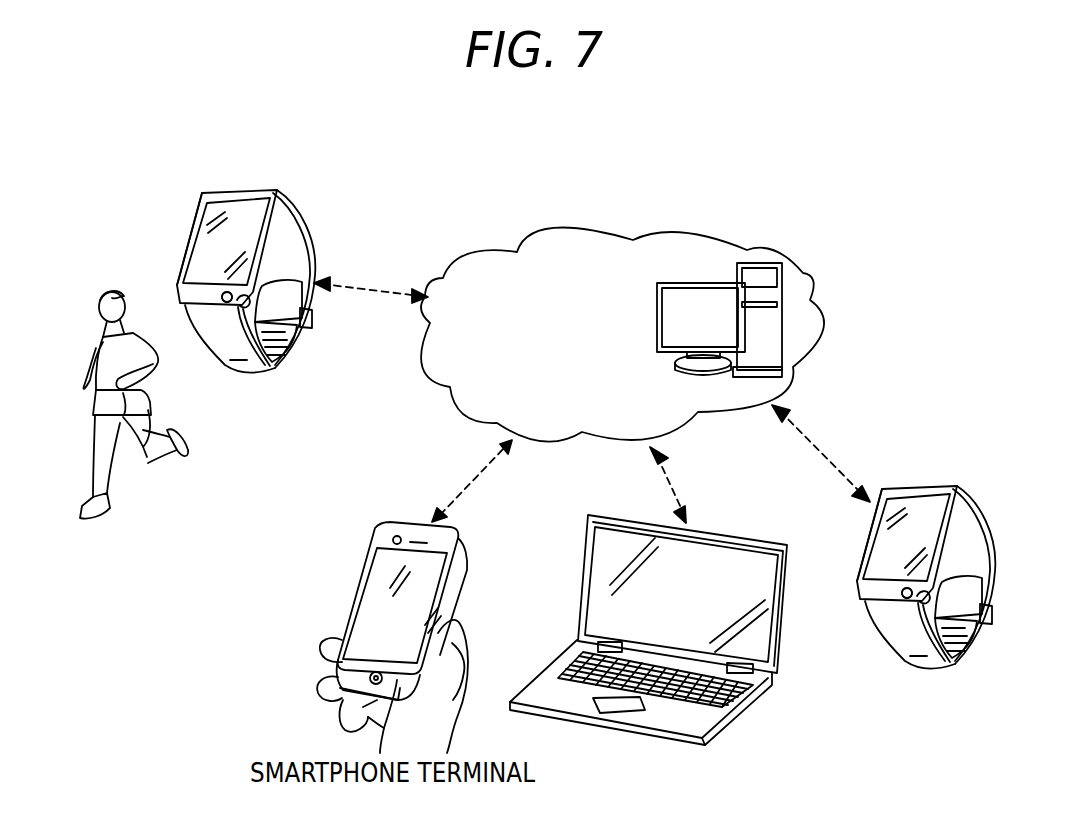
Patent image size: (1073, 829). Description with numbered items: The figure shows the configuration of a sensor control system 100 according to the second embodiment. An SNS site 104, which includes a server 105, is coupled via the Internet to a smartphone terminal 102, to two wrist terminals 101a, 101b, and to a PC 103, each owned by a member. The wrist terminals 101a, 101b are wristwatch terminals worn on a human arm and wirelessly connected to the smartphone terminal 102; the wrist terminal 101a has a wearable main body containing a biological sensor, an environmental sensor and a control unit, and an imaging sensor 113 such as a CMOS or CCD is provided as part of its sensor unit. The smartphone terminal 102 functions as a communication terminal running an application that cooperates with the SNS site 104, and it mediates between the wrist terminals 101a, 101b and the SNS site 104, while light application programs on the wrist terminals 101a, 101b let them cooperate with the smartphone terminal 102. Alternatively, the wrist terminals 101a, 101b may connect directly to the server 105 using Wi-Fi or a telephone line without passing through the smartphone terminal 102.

The sensor control system 100 is at (740, 121).
The wrist terminal 101a is at (293, 202).
The wrist terminal 101b is at (977, 497).
The smartphone terminal 102 is at (470, 536).
The PC 103 is at (748, 541).
The SNS site 104 is at (674, 224).
The server 105 is at (783, 268).
The imaging sensor 113 is at (222, 296).